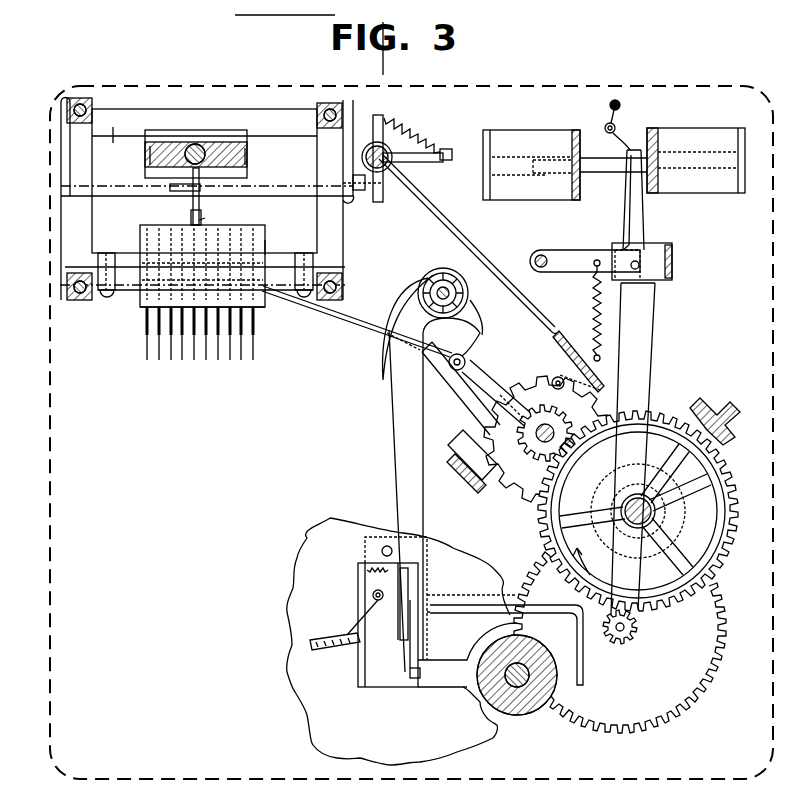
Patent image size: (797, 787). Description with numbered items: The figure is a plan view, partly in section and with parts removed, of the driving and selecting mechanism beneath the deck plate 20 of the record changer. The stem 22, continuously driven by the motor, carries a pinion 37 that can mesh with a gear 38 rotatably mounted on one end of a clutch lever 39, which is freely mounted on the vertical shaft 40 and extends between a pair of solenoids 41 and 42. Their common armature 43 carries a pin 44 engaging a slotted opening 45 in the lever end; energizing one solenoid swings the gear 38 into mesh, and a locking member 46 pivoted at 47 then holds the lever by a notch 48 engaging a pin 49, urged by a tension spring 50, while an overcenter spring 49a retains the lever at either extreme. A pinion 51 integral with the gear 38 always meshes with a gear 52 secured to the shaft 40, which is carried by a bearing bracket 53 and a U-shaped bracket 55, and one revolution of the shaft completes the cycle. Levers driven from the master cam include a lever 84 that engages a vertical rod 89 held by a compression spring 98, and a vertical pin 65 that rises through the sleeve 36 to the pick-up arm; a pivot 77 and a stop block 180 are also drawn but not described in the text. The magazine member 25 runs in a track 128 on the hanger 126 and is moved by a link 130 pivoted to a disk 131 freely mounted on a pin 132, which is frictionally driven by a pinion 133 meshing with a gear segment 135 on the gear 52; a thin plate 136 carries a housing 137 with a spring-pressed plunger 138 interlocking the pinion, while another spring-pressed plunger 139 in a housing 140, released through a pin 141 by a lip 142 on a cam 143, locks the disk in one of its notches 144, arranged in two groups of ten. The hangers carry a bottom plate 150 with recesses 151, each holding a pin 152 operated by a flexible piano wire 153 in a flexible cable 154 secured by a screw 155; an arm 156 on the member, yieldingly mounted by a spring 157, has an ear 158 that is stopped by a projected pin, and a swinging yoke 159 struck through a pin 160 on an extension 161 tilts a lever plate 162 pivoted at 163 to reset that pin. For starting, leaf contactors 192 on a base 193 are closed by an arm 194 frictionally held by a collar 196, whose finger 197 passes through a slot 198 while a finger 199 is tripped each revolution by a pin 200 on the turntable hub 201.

The deck plate 20 is at (297, 705).
The stem 22 is at (523, 705).
The member 25 is at (175, 140).
The sleeve 36 is at (420, 297).
The pinion 37 is at (508, 715).
The gear 38 is at (657, 716).
The clutch lever 39 is at (657, 336).
The vertical shaft 40 is at (663, 512).
The solenoid 41 is at (715, 185).
The solenoid 42 is at (535, 190).
The armature 43 is at (599, 175).
The pin 44 is at (641, 160).
The slotted opening 45 is at (627, 158).
The locking member 46 is at (559, 253).
The pivot 47 is at (535, 260).
The notch 48 is at (633, 262).
The pin 49 is at (640, 272).
The overcenter spring 49a is at (621, 117).
The tension spring 50 is at (592, 300).
The pinion 51 is at (620, 645).
The gear 52 is at (728, 485).
The bearing bracket 53 is at (719, 407).
The U-shaped bracket 55 is at (465, 480).
The vertical pin 65 is at (442, 275).
The pivot 77 is at (449, 365).
The lever 84 is at (457, 237).
The vertical rod 89 is at (392, 165).
The compression spring 98 is at (388, 149).
The hanger 126 is at (92, 107).
The track 128 is at (113, 145).
The link 130 is at (339, 324).
The disk 131 is at (480, 430).
The pin 132 is at (527, 435).
The pinion 133 is at (556, 380).
The gear segment 135 is at (723, 538).
The thin plate 136 is at (527, 500).
The housing 137 is at (603, 450).
The spring-pressed plunger 138 is at (624, 398).
The spring-pressed plunger 139 is at (578, 551).
The housing 140 is at (650, 457).
The pin 141 is at (638, 498).
The lip 142 is at (645, 533).
The cam 143 is at (687, 493).
The notches 144 is at (497, 465).
The bottom plate 150 is at (140, 277).
The recesses 151 is at (266, 250).
The pin 152 is at (192, 220).
The flexible piano wire 153 is at (147, 350).
The flexible cable 154 is at (147, 330).
The screw 155 is at (140, 307).
The arm 156 is at (205, 220).
The spring 157 is at (153, 146).
The ear 158 is at (201, 222).
The swinging yoke 159 is at (61, 162).
The pin 160 is at (382, 188).
The extension 161 is at (360, 190).
The lever plate 162 is at (193, 188).
The pivot 163 is at (217, 142).
The stop block 180 is at (673, 262).
The leaf contactors 192 is at (390, 688).
The base 193 is at (370, 580).
The arm 194 is at (408, 462).
The collar 196 is at (422, 283).
The finger 197 is at (410, 680).
The slot 198 is at (449, 684).
The finger 199 is at (583, 672).
The pin 200 is at (553, 627).
The hub 201 is at (542, 712).